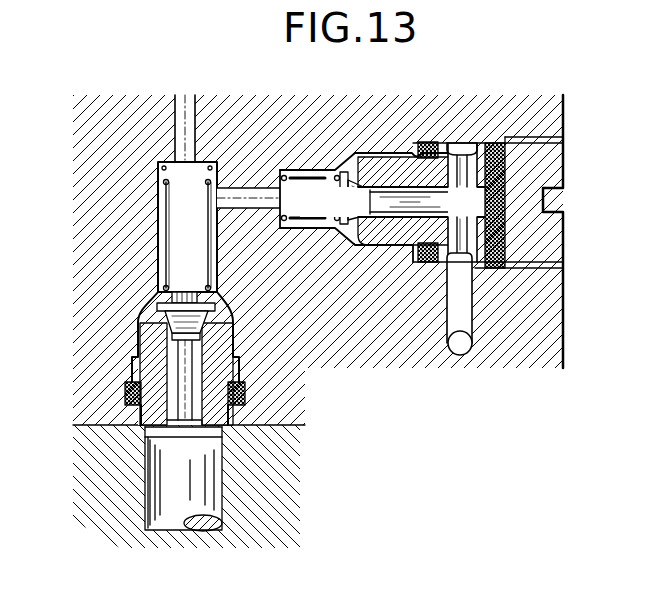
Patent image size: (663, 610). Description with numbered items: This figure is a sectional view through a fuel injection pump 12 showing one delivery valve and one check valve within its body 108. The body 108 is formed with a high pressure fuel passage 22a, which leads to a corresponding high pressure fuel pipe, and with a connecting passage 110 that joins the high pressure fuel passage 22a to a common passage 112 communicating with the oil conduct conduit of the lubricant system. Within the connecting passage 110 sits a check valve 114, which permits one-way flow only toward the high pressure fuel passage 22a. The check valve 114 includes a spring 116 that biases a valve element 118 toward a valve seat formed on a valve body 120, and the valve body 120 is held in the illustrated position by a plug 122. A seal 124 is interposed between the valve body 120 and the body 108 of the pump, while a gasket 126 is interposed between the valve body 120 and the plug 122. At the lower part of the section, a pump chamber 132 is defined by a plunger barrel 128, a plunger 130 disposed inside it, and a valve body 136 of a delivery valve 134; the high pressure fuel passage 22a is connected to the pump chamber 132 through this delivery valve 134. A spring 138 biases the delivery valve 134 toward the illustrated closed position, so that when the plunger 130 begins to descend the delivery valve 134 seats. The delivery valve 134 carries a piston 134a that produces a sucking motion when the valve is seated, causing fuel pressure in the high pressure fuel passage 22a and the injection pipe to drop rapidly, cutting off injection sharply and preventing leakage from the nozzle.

The fuel injection pump 12 is at (135, 79).
The high pressure fuel passage 22a is at (172, 208).
The body 108 is at (564, 323).
The connecting passage 110 is at (346, 250).
The common passage 112 is at (460, 348).
The check valve 114 is at (413, 148).
The spring 116 is at (318, 170).
The valve element 118 is at (357, 160).
The valve body 120 is at (455, 143).
The plug 122 is at (545, 160).
The seal 124 is at (432, 260).
The gasket 126 is at (497, 143).
The plunger barrel 128 is at (108, 480).
The plunger 130 is at (175, 520).
The pump chamber 132 is at (183, 432).
The delivery valve 134 is at (158, 316).
The piston 134a is at (165, 338).
The valve body 136 is at (140, 368).
The spring 138 is at (165, 262).